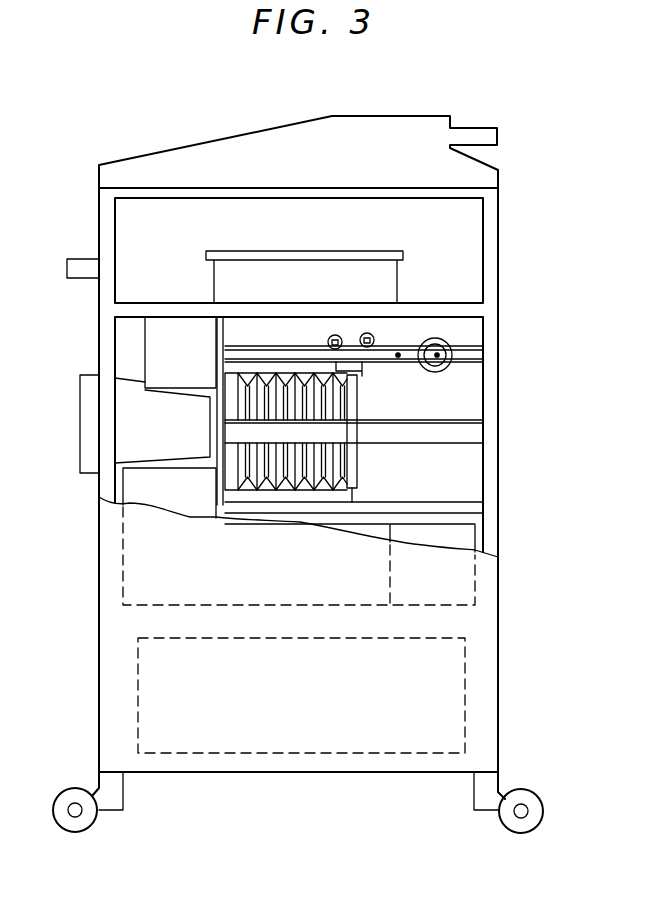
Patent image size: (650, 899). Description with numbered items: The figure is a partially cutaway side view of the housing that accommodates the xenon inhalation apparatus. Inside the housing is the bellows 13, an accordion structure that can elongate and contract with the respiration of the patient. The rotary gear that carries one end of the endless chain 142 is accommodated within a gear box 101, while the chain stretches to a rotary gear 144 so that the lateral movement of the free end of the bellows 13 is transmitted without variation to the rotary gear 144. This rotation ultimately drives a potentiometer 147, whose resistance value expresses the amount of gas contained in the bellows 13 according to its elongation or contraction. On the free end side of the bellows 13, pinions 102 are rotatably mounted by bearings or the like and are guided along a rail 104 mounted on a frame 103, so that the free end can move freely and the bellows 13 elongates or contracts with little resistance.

The gear box 101 is at (160, 351).
The endless chain 142 is at (268, 346).
The pinions 102 is at (348, 339).
The rotary gear 144 is at (400, 349).
The rail 104 is at (465, 350).
The potentiometer 147 is at (450, 366).
The frame 103 is at (492, 406).
The bellows 13 is at (325, 462).